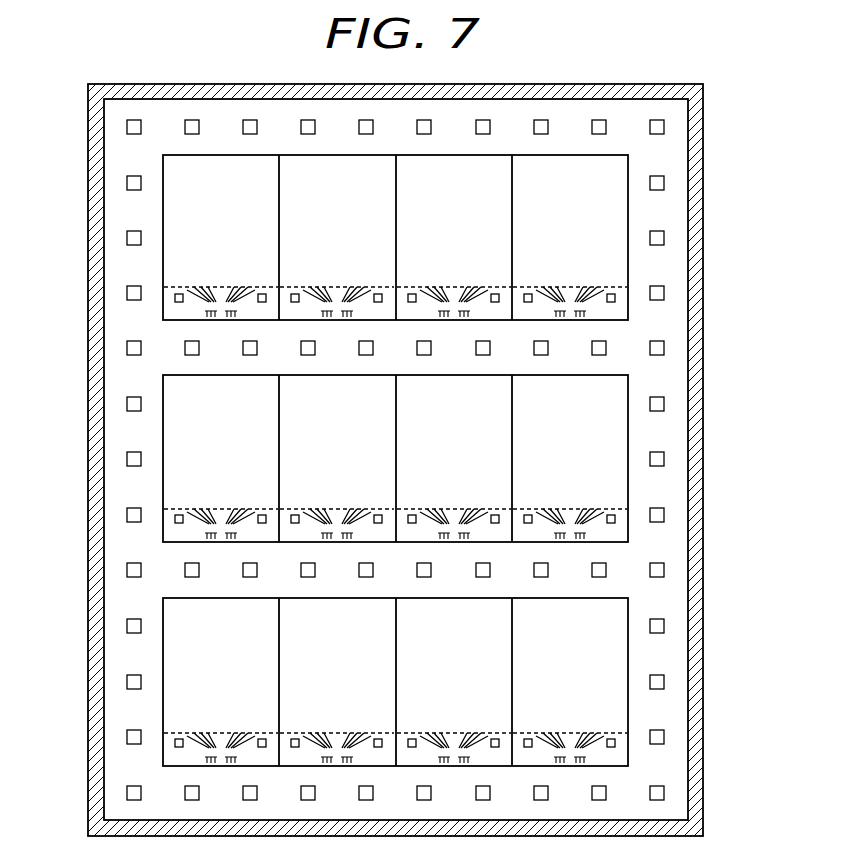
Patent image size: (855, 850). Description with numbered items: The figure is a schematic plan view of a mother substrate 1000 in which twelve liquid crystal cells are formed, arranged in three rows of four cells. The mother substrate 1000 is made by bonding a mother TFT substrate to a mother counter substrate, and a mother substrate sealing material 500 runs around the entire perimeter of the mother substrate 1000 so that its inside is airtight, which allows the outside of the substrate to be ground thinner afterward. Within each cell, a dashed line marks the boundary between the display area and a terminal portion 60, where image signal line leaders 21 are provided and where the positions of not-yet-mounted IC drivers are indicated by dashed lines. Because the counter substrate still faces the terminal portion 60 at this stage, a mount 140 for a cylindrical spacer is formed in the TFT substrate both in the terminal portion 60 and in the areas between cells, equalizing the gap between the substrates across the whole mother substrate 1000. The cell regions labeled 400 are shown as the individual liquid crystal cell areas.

The mother substrate 1000 is at (704, 420).
The mother substrate sealing material 500 is at (690, 483).
The recording element substrate 400 is at (598, 205).
The mount 140 is at (665, 293).
The image signal line leaders 21 is at (201, 292).
The terminal portion 60 is at (192, 313).